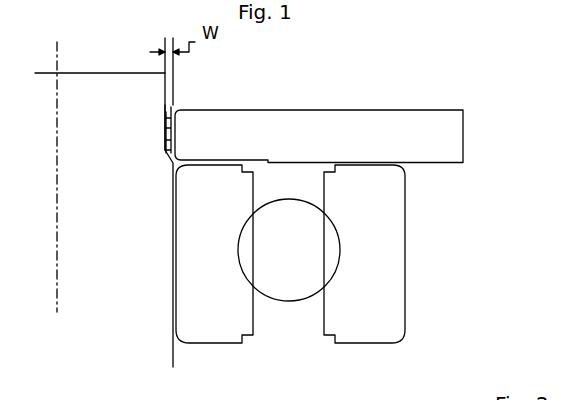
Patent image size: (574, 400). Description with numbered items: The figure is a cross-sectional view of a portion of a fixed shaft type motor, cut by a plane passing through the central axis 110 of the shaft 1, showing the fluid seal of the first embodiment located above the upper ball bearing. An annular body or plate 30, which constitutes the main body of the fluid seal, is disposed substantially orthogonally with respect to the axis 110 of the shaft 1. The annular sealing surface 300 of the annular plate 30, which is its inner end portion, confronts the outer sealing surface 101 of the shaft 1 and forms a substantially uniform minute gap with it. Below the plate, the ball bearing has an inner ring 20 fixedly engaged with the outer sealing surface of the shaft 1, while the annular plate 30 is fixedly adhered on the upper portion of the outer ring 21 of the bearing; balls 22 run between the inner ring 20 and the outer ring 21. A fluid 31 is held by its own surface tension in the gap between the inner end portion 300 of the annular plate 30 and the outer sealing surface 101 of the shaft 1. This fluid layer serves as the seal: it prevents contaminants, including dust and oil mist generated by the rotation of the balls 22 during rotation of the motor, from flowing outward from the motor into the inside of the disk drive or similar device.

The shaft 1 is at (107, 102).
The central axis 110 is at (57, 52).
The outer sealing surface 101 is at (170, 108).
The annular sealing surface 300 is at (176, 132).
The fluid 31 is at (176, 132).
The annular plate 30 is at (303, 127).
The inner ring 20 is at (203, 262).
The outer ring 21 is at (378, 272).
The balls 22 is at (292, 281).